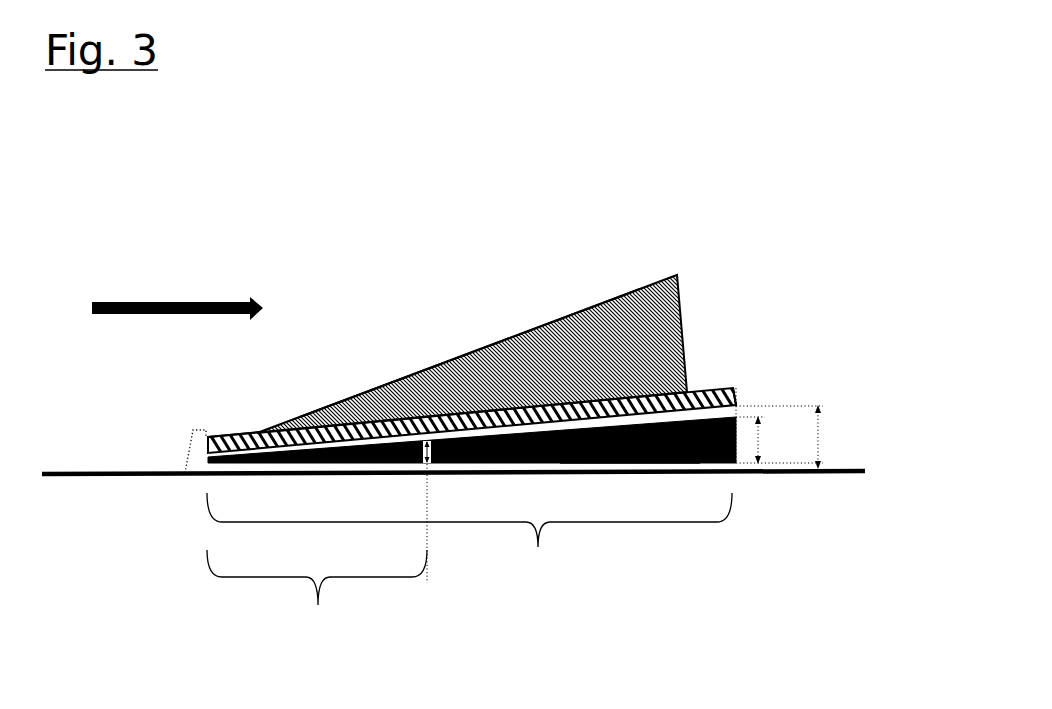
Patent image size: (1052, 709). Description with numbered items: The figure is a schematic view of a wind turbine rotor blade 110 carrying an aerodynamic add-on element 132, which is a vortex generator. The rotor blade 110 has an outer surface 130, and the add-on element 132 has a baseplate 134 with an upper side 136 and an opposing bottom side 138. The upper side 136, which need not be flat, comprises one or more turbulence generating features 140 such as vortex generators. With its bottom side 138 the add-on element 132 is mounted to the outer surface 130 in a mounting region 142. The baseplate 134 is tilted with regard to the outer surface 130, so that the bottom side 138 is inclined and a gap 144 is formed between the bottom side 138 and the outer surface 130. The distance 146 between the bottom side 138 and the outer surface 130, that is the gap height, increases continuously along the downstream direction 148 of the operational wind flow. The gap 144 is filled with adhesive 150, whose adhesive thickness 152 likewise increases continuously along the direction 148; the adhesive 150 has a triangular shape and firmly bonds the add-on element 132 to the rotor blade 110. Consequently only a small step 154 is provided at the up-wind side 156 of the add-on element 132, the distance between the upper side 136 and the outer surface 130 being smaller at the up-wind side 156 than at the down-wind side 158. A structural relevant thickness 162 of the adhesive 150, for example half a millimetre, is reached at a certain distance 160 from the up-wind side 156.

The rotor blade 110 is at (482, 347).
The outer surface 130 is at (132, 477).
The aerodynamic add-on element 132 is at (718, 238).
The baseplate 134 is at (233, 432).
The upper side 136 is at (370, 388).
The bottom side 138 is at (703, 466).
The turbulence generating feature 140 is at (607, 297).
The mounting region 142 is at (469, 538).
The gap 144 is at (497, 463).
The distance 146 is at (823, 442).
The downstream direction 148 is at (137, 298).
The adhesive 150 is at (632, 464).
The adhesive thickness 152 is at (768, 443).
The step 154 is at (177, 438).
The up-wind side 156 is at (207, 409).
The down-wind side 158 is at (758, 380).
The distance 160 is at (317, 594).
The structural relevant thickness 162 is at (433, 470).